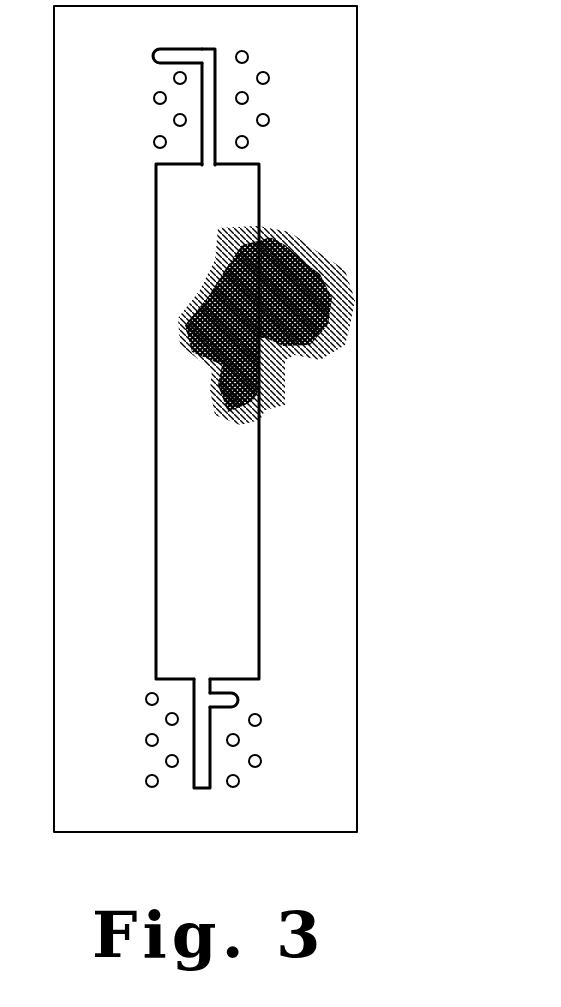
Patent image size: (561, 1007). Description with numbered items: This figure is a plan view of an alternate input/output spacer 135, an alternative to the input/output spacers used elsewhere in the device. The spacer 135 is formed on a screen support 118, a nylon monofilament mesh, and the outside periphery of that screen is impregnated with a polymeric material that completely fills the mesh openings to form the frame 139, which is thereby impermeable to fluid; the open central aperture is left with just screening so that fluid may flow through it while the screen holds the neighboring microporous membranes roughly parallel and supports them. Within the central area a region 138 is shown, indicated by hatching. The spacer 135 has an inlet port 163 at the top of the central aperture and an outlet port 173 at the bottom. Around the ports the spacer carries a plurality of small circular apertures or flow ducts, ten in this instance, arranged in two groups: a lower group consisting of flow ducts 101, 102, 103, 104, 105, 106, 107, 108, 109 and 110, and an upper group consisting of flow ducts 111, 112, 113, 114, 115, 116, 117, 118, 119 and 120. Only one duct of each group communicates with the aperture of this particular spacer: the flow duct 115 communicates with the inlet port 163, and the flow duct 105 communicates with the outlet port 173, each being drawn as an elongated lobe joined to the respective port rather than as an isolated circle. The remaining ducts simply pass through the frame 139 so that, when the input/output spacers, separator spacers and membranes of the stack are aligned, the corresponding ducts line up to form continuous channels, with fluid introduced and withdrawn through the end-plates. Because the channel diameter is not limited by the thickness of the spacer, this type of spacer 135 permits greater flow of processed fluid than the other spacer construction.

The input/output spacer 135 is at (362, 816).
The frame 139 is at (320, 483).
The contaminated / reacted area 138 is at (220, 237).
The inlet port 163 is at (208, 160).
The outlet port 173 is at (202, 680).
The flow duct 101 is at (239, 781).
The flow duct 102 is at (261, 761).
The flow duct 103 is at (239, 740).
The flow duct 104 is at (261, 720).
The flow duct 105 is at (243, 702).
The flow duct 106 is at (146, 699).
The flow duct 107 is at (166, 719).
The flow duct 108 is at (146, 740).
The flow duct 109 is at (166, 761).
The flow duct 110 is at (146, 781).
The flow duct 111 is at (154, 142).
The flow duct 112 is at (174, 120).
The flow duct 113 is at (154, 98).
The flow duct 114 is at (174, 78).
The flow duct 115 is at (153, 56).
The flow duct 116 is at (248, 57).
The flow duct 117 is at (269, 78).
The screen support 118 is at (248, 98).
The flow duct 119 is at (269, 120).
The flow duct 120 is at (248, 142).